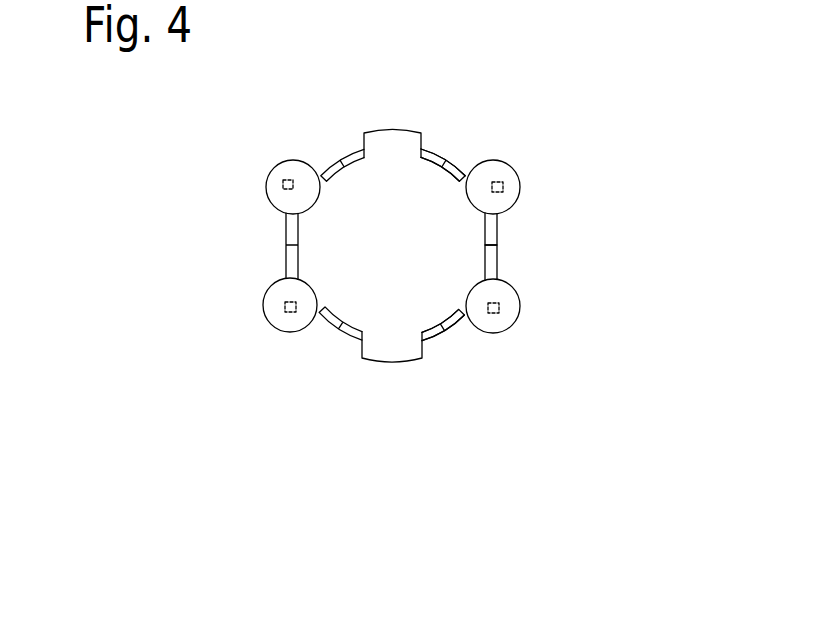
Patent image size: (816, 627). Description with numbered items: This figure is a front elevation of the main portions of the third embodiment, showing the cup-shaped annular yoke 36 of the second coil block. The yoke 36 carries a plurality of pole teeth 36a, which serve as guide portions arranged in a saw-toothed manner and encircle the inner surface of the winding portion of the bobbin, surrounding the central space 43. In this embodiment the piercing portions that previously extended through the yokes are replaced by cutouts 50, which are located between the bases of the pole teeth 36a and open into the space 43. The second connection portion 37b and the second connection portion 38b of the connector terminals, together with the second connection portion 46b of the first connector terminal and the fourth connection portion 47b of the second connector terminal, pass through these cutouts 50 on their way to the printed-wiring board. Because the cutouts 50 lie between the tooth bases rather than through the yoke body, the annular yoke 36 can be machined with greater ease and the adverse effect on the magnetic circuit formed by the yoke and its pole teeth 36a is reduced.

The annular yoke 36 is at (337, 142).
The pole teeth 36a is at (453, 162).
The space 43 is at (458, 247).
The cutouts 50 is at (291, 160).
The second connection portion 37b is at (295, 246).
The fourth connection portion 47b is at (283, 187).
The second connection portion 38b is at (584, 343).
The second connection portion 46b is at (513, 320).